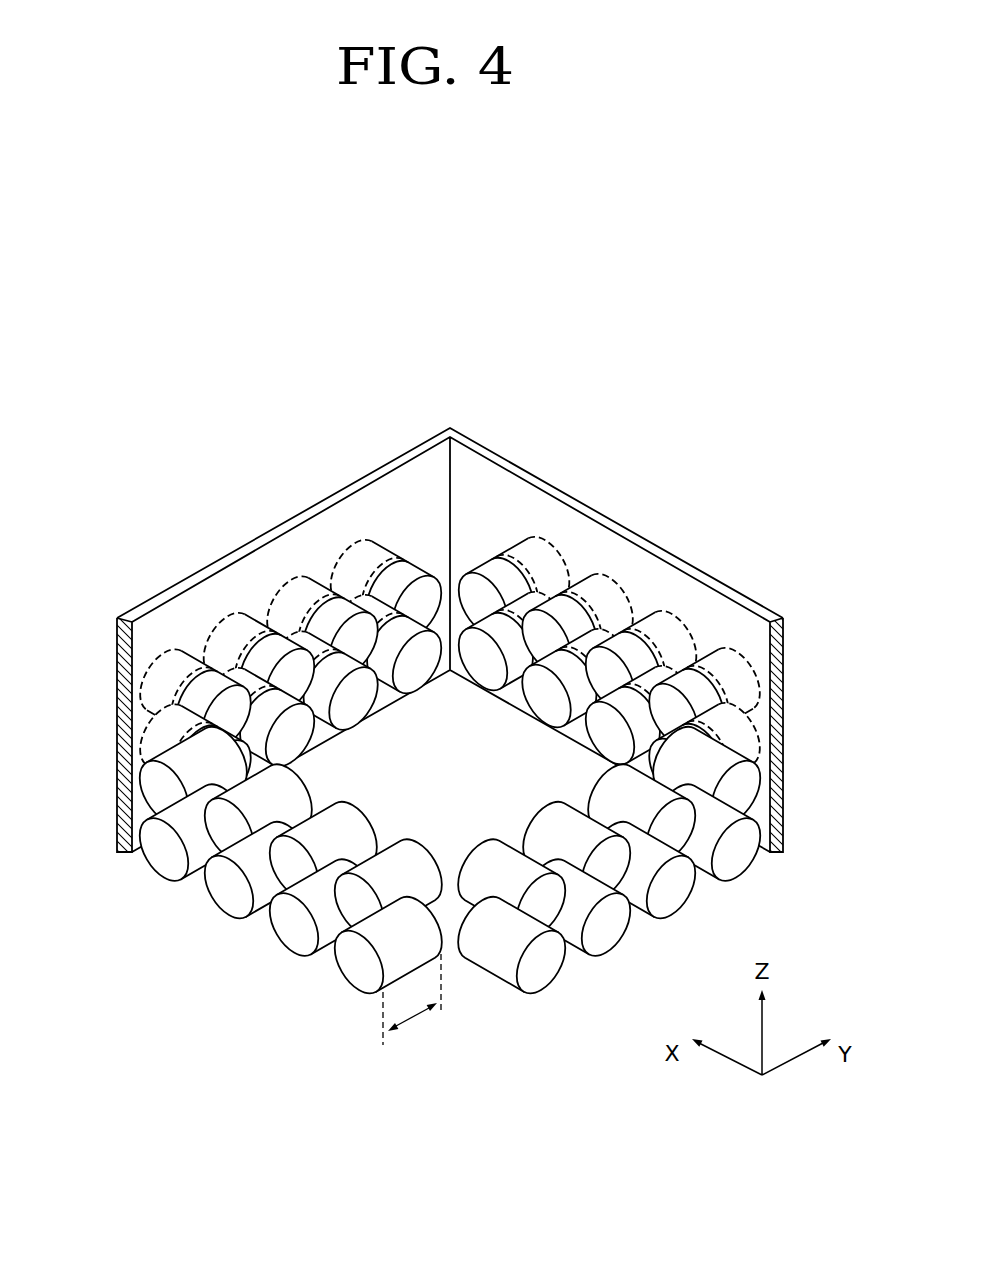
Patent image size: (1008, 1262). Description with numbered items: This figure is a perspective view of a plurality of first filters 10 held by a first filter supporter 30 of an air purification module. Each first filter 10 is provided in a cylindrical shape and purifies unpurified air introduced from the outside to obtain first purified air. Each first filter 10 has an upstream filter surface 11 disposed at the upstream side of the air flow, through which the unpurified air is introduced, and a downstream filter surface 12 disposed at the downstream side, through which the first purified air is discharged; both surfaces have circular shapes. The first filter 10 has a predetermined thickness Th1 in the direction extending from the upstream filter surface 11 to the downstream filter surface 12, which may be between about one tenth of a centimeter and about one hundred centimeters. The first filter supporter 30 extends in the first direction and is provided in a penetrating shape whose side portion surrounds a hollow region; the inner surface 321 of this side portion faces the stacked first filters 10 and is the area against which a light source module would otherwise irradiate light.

The first filter 10 is at (165, 788).
The (1-1)th filter surface 11 is at (286, 866).
The (1-2)th filter surface 12 is at (362, 811).
The first filter supporter 30 is at (786, 672).
The inner surface 321 is at (589, 550).
The thickness Th1 is at (408, 1018).